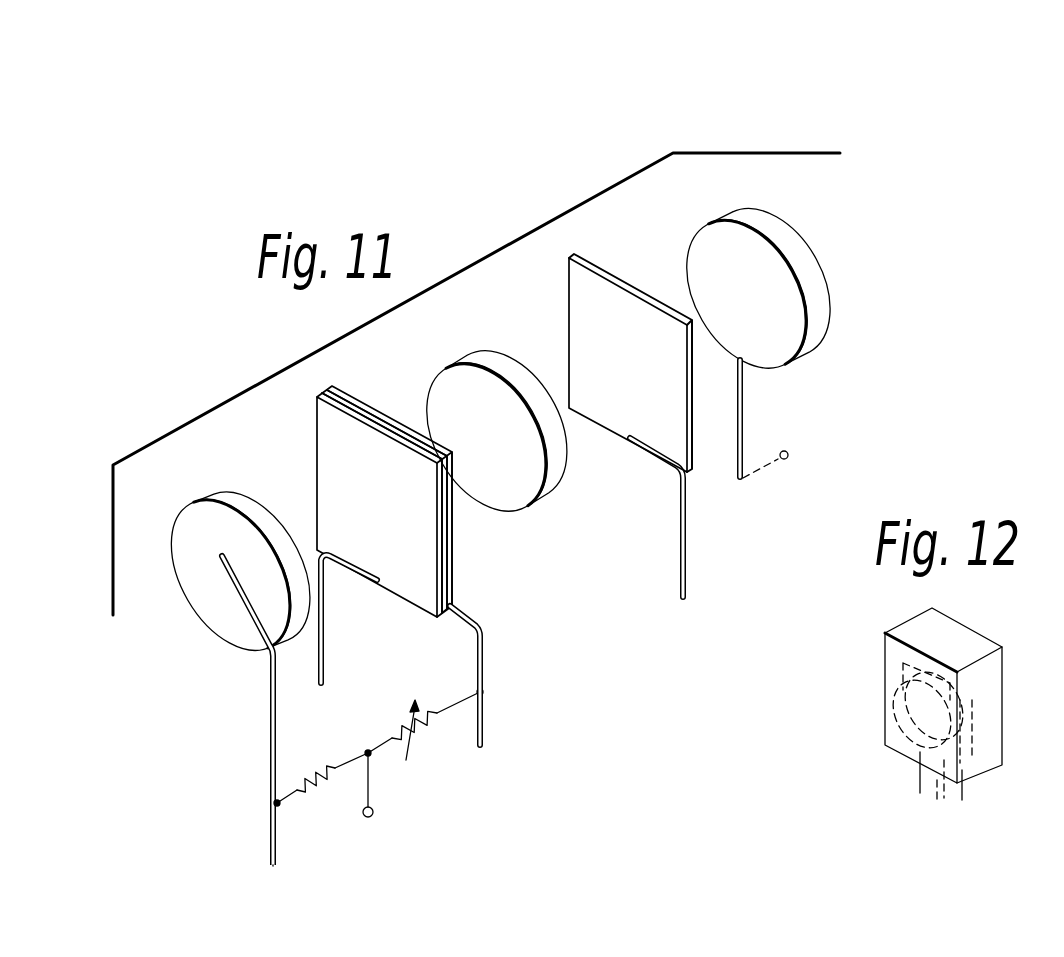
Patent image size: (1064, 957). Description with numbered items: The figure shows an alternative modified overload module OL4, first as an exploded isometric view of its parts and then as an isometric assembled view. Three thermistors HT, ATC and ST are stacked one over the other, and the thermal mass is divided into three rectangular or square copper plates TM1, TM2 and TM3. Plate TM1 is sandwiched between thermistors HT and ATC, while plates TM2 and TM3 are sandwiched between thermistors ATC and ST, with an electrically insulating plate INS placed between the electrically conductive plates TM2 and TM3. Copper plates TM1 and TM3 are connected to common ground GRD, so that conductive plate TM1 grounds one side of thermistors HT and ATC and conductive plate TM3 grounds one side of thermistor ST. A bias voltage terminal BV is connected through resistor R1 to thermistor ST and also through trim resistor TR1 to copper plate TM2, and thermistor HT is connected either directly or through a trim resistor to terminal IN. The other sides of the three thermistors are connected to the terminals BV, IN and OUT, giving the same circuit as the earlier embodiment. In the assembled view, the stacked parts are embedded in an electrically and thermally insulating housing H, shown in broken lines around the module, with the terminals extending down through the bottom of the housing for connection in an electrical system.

In FIG. 11, the overload module OL4 is at (592, 196).
In FIG. 12, the overload module OL4 is at (900, 619).
In FIG. 11, the thermistor HT is at (786, 243).
In FIG. 11, the copper plate TM1 is at (580, 293).
In FIG. 11, the copper plate TM2 is at (346, 388).
In FIG. 11, the copper plate TM3 is at (322, 417).
In FIG. 11, the electrically insulating plate INS is at (444, 541).
In FIG. 11, the thermistor ATC is at (446, 378).
In FIG. 11, the thermistor ST is at (193, 524).
In FIG. 11, the common ground GRD is at (323, 664).
In FIG. 11, the terminal IN is at (788, 455).
In FIG. 11, the terminal OUT is at (271, 866).
In FIG. 11, the resistor R1 is at (316, 770).
In FIG. 11, the trim resistor TR1 is at (421, 740).
In FIG. 11, the bias voltage terminal BV is at (369, 800).
In FIG. 12, the housing H is at (965, 636).